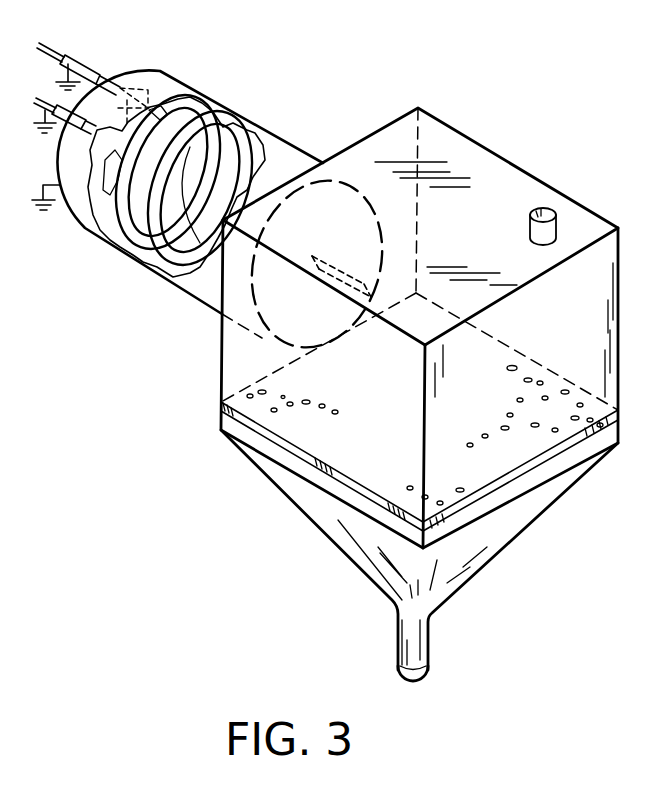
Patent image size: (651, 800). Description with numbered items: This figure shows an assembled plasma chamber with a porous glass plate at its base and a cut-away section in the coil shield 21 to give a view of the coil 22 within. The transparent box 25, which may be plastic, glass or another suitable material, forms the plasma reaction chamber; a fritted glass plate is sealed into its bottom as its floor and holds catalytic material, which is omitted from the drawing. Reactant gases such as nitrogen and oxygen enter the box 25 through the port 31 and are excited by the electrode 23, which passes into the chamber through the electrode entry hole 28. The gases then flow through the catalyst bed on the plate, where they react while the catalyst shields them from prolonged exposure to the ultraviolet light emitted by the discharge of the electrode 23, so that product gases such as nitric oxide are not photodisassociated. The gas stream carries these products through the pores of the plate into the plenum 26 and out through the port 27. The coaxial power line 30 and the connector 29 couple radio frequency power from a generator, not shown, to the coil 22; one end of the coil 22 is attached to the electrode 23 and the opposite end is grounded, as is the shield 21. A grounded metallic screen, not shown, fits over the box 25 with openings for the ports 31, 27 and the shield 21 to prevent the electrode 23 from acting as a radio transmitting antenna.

The coil shield 21 is at (238, 114).
The coil 22 is at (252, 150).
The electrode 23 is at (368, 272).
The transparent box 25 is at (220, 376).
The plenum 26 is at (312, 525).
The port 27 is at (398, 645).
The electrode entry hole 28 is at (327, 262).
The connector 29 is at (130, 104).
The coaxial power line 30 is at (97, 68).
The port 31 is at (530, 225).